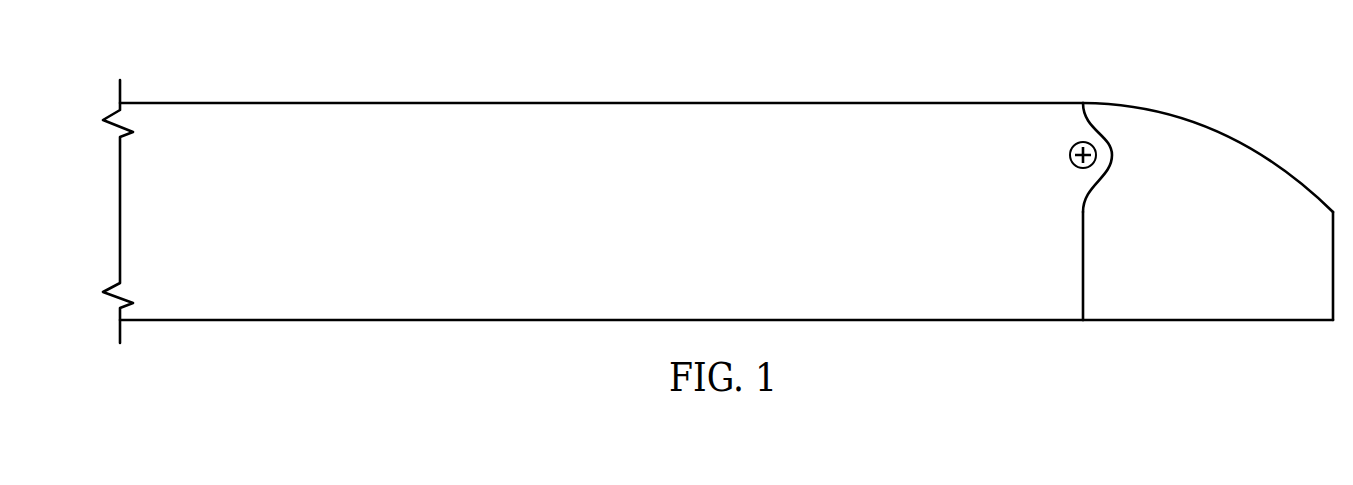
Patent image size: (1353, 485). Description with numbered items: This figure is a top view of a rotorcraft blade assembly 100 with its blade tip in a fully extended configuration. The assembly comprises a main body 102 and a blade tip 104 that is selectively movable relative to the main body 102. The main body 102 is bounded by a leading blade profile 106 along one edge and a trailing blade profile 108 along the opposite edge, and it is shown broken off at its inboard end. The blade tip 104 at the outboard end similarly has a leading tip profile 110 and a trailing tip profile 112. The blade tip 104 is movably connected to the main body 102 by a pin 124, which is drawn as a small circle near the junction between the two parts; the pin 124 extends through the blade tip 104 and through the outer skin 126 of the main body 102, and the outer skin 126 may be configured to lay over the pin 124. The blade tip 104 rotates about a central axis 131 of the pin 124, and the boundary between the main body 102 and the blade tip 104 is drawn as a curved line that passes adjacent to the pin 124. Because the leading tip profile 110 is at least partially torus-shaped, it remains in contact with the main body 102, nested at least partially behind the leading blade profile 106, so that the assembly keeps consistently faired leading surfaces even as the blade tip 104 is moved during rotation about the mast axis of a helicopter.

The rotorcraft blade assembly 100 is at (984, 64).
The main body 102 is at (539, 96).
The blade tip 104 is at (1214, 122).
The leading blade profile 106 is at (817, 103).
The trailing blade profile 108 is at (555, 322).
The leading tip profile 110 is at (1268, 163).
The trailing tip profile 112 is at (1218, 323).
The pin 124 is at (1070, 156).
The outer skin 126 is at (992, 310).
The central axis 131 is at (1091, 164).